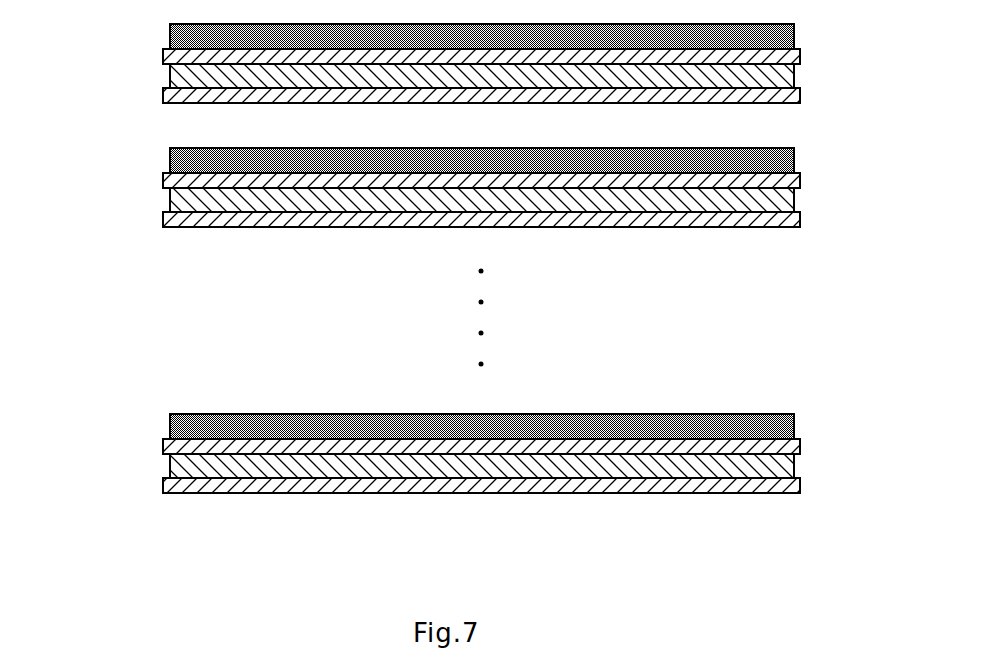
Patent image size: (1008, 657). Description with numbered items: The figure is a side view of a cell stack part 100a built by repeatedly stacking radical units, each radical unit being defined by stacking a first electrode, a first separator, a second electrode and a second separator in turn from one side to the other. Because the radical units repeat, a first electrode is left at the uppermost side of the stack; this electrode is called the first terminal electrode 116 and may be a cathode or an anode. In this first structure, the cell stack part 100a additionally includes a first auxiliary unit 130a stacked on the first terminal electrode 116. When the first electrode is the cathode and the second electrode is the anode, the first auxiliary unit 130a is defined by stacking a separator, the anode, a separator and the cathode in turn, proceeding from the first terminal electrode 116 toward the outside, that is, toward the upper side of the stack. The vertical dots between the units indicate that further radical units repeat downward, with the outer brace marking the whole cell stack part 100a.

The cell stack part 100a is at (817, 38).
The first auxiliary unit 130a is at (78, 33).
The first terminal electrode 116 is at (431, 149).